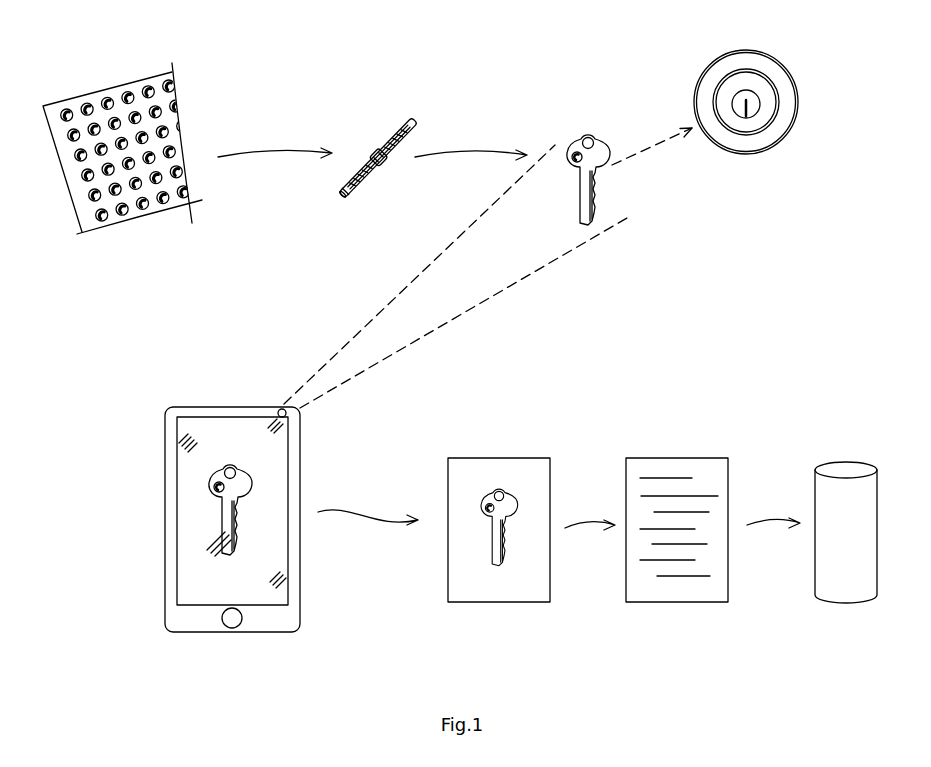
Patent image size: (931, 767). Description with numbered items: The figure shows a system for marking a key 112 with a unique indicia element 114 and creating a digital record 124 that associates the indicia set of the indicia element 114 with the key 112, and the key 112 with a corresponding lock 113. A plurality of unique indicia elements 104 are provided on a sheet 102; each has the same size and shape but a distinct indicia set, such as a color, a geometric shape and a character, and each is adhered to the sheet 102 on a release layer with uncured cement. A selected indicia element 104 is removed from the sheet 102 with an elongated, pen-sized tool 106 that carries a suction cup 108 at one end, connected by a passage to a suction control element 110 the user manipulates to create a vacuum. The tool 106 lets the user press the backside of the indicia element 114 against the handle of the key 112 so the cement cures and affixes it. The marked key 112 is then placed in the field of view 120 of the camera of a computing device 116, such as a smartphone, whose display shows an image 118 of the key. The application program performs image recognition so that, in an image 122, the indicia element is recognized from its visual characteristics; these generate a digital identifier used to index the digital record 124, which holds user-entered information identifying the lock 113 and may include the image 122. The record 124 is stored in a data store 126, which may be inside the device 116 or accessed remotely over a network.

The sheet 102 is at (111, 139).
The unique indicia elements 104 is at (88, 103).
The tool 106 is at (410, 120).
The suction cup 108 is at (342, 202).
The suction control element 110 is at (377, 152).
The key 112 is at (612, 147).
The unique indicia element 114 is at (577, 151).
The lock 113 is at (792, 70).
The computing device 116 is at (191, 519).
The image of the key 118 is at (212, 480).
The field of view 120 is at (416, 342).
The image 122 is at (497, 458).
The digital record 124 is at (672, 458).
The data store 126 is at (843, 462).